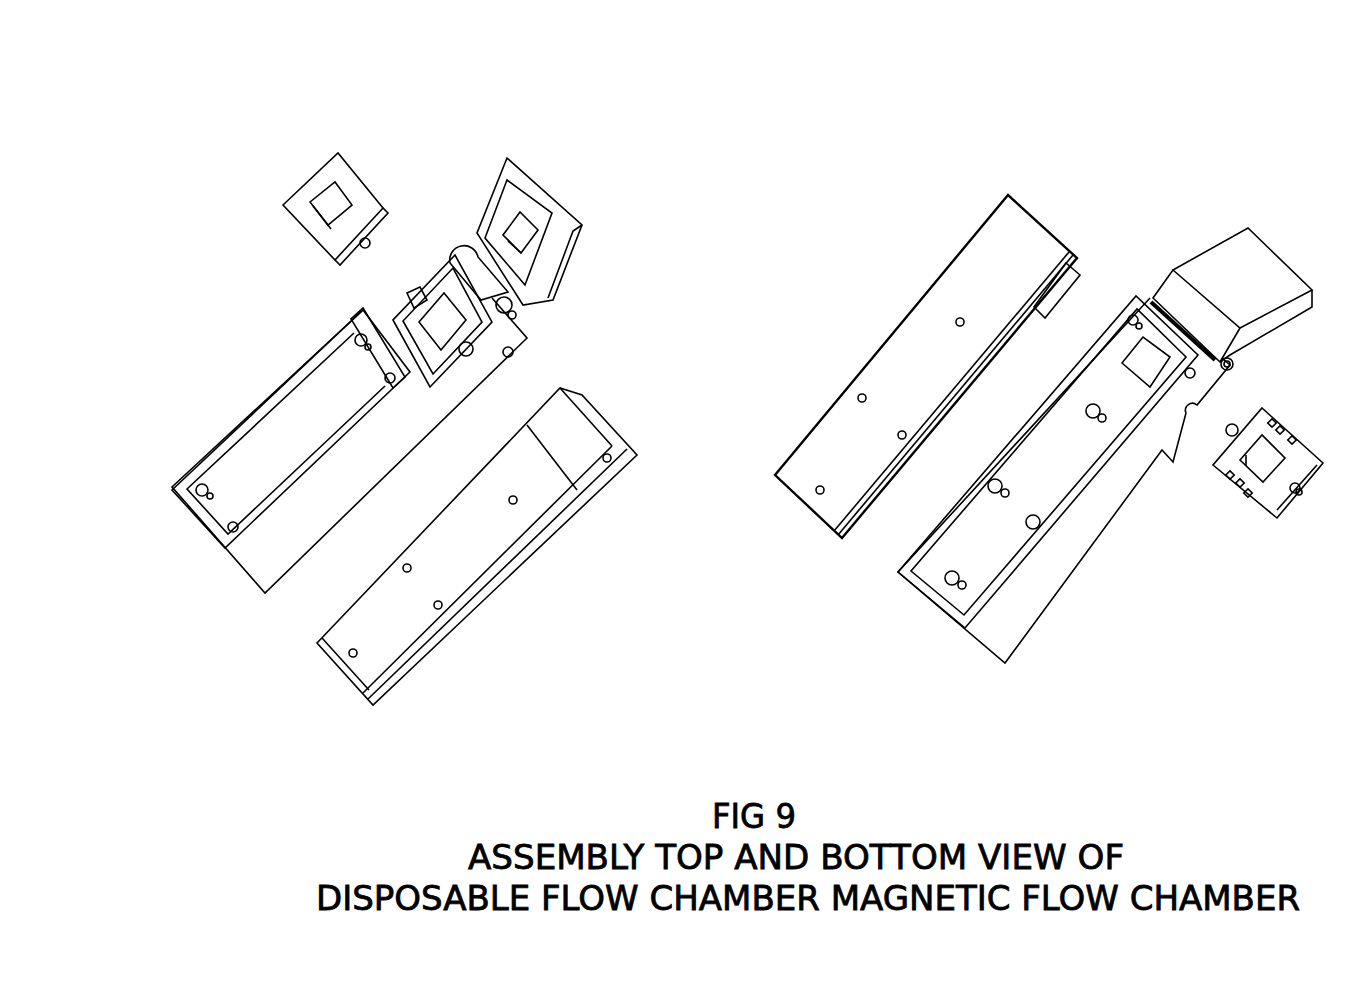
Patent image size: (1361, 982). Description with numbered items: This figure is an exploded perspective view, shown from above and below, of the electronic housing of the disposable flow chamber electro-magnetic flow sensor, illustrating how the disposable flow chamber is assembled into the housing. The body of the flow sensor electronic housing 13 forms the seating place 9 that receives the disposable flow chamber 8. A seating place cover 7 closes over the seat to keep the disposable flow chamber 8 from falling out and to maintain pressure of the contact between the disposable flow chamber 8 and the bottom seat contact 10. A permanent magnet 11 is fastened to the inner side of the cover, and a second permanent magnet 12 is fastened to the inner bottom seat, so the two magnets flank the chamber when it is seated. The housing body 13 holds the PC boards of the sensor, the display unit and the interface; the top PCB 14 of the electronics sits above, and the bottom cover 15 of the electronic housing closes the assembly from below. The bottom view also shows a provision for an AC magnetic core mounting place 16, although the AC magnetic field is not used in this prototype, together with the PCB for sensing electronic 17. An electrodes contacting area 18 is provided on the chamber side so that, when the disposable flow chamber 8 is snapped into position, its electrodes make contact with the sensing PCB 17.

The seating place cover 7 is at (547, 195).
The disposable flow chamber 8 is at (313, 190).
The seating place 9 is at (417, 345).
The bottom seat contact 10 is at (457, 302).
The permanent magnet 11 is at (518, 235).
The permanent magnet 12 is at (447, 322).
The body of the flow sensor electronic housing 13 is at (300, 563).
The top PCB 14 is at (263, 463).
The bottom cover 15 is at (468, 557).
The AC magnetic core mounting place 16 is at (1150, 365).
The PCB for sensing electronic 17 is at (1013, 548).
The electrodes contacting area 18 is at (1287, 425).